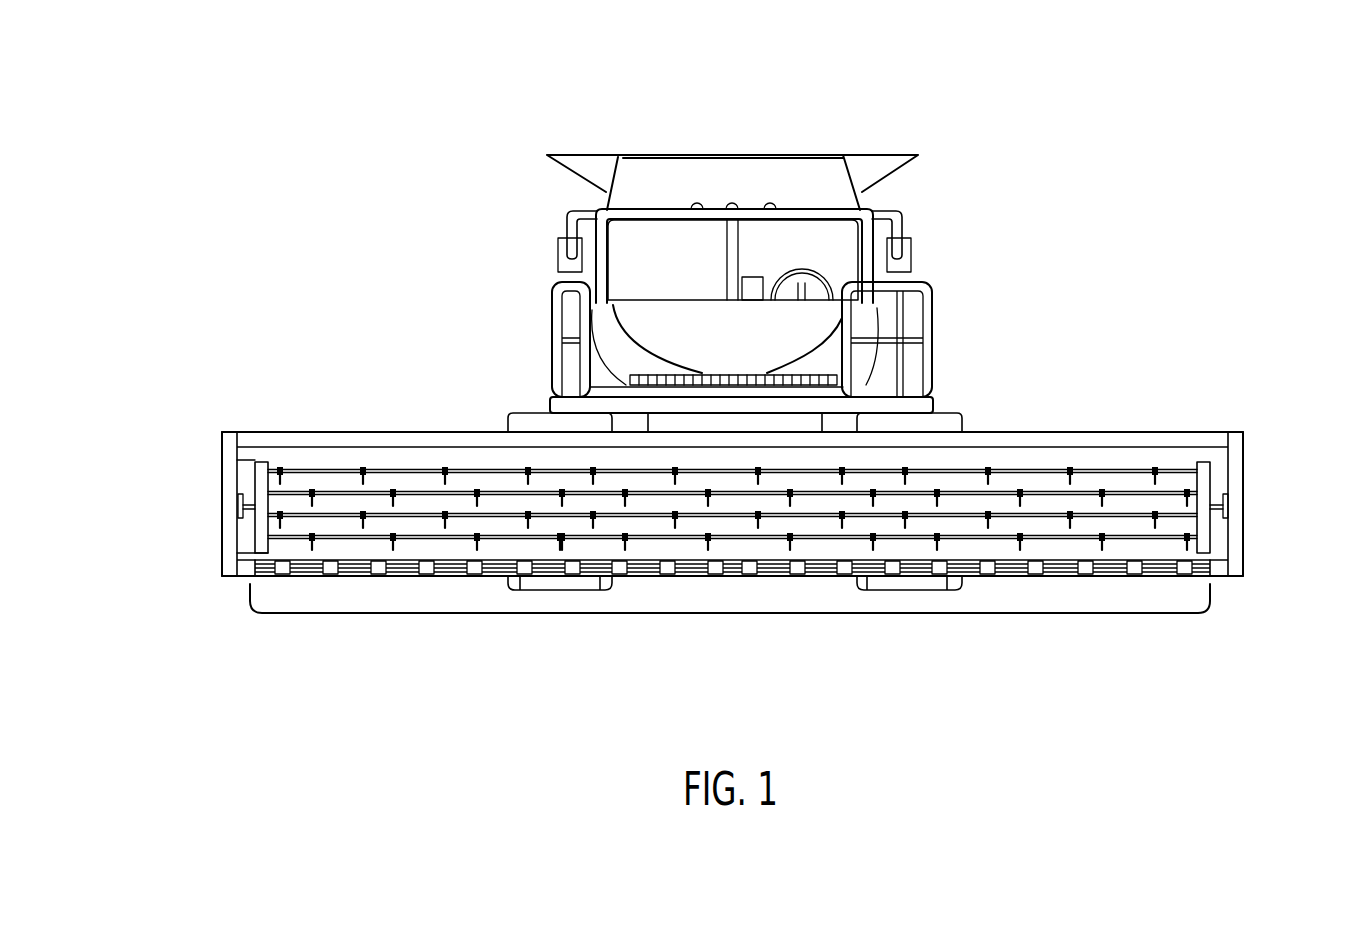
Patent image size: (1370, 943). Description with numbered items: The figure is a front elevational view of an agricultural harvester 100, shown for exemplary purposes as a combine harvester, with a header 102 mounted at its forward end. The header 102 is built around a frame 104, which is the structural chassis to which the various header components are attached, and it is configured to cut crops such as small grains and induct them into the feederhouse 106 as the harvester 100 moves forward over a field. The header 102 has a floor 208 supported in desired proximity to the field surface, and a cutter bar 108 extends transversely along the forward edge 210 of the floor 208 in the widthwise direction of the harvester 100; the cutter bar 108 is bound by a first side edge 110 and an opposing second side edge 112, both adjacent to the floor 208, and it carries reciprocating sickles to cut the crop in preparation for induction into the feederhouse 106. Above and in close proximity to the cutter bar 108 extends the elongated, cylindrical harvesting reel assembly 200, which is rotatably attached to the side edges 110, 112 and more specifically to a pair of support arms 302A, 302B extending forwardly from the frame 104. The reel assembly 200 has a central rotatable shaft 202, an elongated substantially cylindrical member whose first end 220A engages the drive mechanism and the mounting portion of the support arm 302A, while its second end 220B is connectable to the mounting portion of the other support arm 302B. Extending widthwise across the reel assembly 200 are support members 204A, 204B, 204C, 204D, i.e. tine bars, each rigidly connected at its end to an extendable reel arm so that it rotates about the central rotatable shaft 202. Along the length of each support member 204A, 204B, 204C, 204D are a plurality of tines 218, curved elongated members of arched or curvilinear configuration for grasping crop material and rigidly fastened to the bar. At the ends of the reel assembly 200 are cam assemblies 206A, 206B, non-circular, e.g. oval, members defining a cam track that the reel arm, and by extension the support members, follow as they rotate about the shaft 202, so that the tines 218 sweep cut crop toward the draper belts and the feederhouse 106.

The agricultural harvester 100 is at (779, 233).
The header 102 is at (718, 493).
The frame 104 is at (1103, 432).
The feederhouse 106 is at (785, 423).
The cutter bar 108 is at (754, 613).
The first side edge 110 is at (1243, 492).
The second side edge 112 is at (222, 482).
The harvesting reel assembly 200 is at (274, 553).
The central rotatable shaft 202 is at (244, 460).
The support member 204A is at (345, 470).
The support member 204B is at (413, 491).
The support member 204C is at (342, 518).
The support member 204D is at (408, 540).
The cam assembly 206A is at (1203, 475).
The cam assembly 206B is at (266, 462).
The floor 208 is at (650, 548).
The forward edge 210 is at (970, 585).
The tines 218 is at (560, 548).
The first end 220A is at (1217, 520).
The second end 220B is at (241, 522).
The support arm 302A is at (1222, 508).
The support arm 302B is at (240, 507).